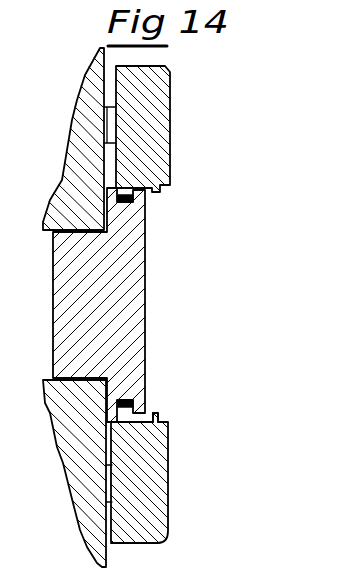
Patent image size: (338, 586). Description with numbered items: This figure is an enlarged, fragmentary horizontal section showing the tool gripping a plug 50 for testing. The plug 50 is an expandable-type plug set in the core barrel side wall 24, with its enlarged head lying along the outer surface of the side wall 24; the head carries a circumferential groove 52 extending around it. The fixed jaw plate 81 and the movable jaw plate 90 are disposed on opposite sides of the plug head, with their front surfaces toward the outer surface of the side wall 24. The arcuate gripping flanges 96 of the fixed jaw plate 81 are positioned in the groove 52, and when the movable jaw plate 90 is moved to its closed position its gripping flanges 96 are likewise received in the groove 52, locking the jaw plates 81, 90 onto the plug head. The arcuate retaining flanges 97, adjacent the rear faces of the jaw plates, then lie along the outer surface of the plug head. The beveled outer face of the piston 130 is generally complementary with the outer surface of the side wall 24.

The piston 130 is at (104, 127).
The fixed jaw plate 81 is at (166, 146).
The gripping flanges 96 is at (137, 195).
The plug 50 is at (53, 304).
The circumferential groove 52 is at (140, 398).
The retaining flanges 97 is at (158, 413).
The core barrel side wall 24 is at (68, 460).
The movable jaw plate 90 is at (169, 487).